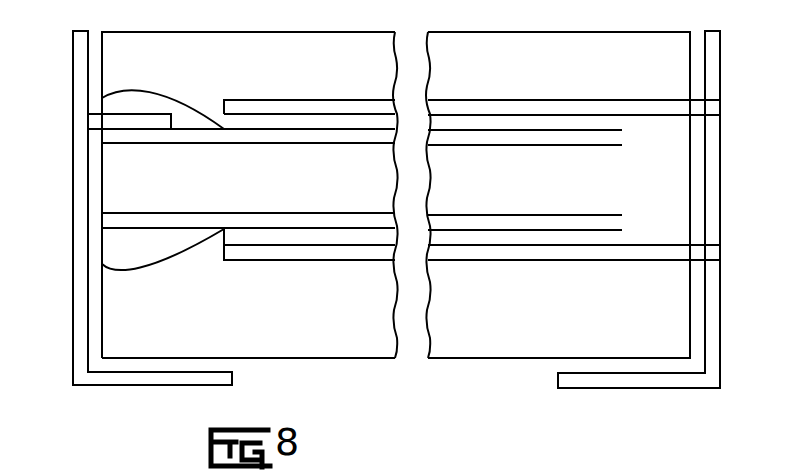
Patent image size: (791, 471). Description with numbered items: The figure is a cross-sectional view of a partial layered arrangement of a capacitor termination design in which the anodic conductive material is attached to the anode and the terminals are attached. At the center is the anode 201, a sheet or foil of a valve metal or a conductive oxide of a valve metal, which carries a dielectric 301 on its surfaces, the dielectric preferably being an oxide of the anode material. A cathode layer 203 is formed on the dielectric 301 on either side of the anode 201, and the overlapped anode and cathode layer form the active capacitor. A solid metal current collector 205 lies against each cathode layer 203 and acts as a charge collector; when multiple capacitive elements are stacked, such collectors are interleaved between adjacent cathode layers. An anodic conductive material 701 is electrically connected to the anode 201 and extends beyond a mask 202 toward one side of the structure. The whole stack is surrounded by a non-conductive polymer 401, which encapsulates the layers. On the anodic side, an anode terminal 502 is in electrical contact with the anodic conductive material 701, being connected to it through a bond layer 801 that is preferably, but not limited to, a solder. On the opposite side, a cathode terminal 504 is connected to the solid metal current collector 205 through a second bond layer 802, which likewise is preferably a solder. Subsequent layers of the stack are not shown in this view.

The anode 201 is at (120, 187).
The mask 202 is at (135, 98).
The cathode layer 203 is at (340, 125).
The solid metal current collector 205 is at (525, 108).
The dielectric 301 is at (320, 138).
The non-conductive polymer 401 is at (308, 345).
The anode terminal 502 is at (172, 377).
The cathode terminal 504 is at (622, 382).
The anodic conductive material 701 is at (153, 113).
The bond layer 801 is at (92, 121).
The bond layer 802 is at (700, 112).